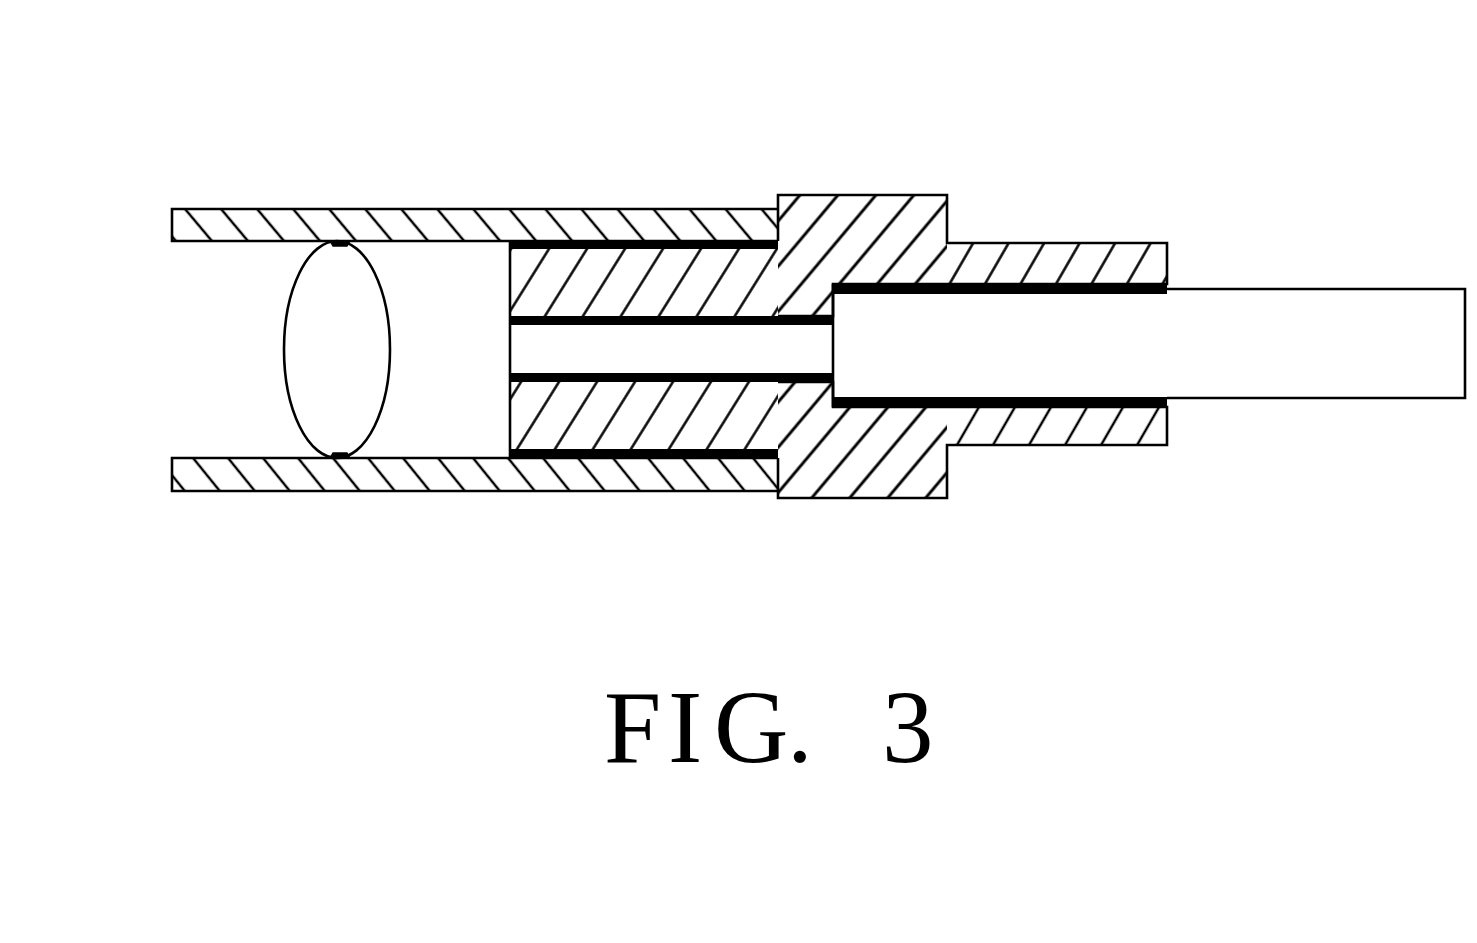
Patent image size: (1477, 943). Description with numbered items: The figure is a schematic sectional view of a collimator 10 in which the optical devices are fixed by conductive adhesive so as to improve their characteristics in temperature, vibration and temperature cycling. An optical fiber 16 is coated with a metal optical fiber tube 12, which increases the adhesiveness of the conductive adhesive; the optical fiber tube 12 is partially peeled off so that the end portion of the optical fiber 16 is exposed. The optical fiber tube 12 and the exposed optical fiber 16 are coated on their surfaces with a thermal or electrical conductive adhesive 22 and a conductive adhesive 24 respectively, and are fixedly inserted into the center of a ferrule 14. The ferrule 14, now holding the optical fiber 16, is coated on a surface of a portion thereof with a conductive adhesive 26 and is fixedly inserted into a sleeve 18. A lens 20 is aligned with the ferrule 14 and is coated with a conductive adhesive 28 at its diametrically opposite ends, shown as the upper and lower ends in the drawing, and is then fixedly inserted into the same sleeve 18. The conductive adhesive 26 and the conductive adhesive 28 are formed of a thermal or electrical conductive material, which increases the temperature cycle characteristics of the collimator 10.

The collimator 10 is at (1058, 148).
The optical fiber tube 12 is at (1323, 300).
The ferrule 14 is at (862, 212).
The optical fiber 16 is at (518, 352).
The sleeve 18 is at (440, 208).
The lens 20 is at (287, 340).
The conductive adhesive 22 is at (1060, 406).
The conductive adhesive 24 is at (687, 382).
The conductive adhesive 26 is at (557, 458).
The conductive adhesive 28 is at (340, 460).